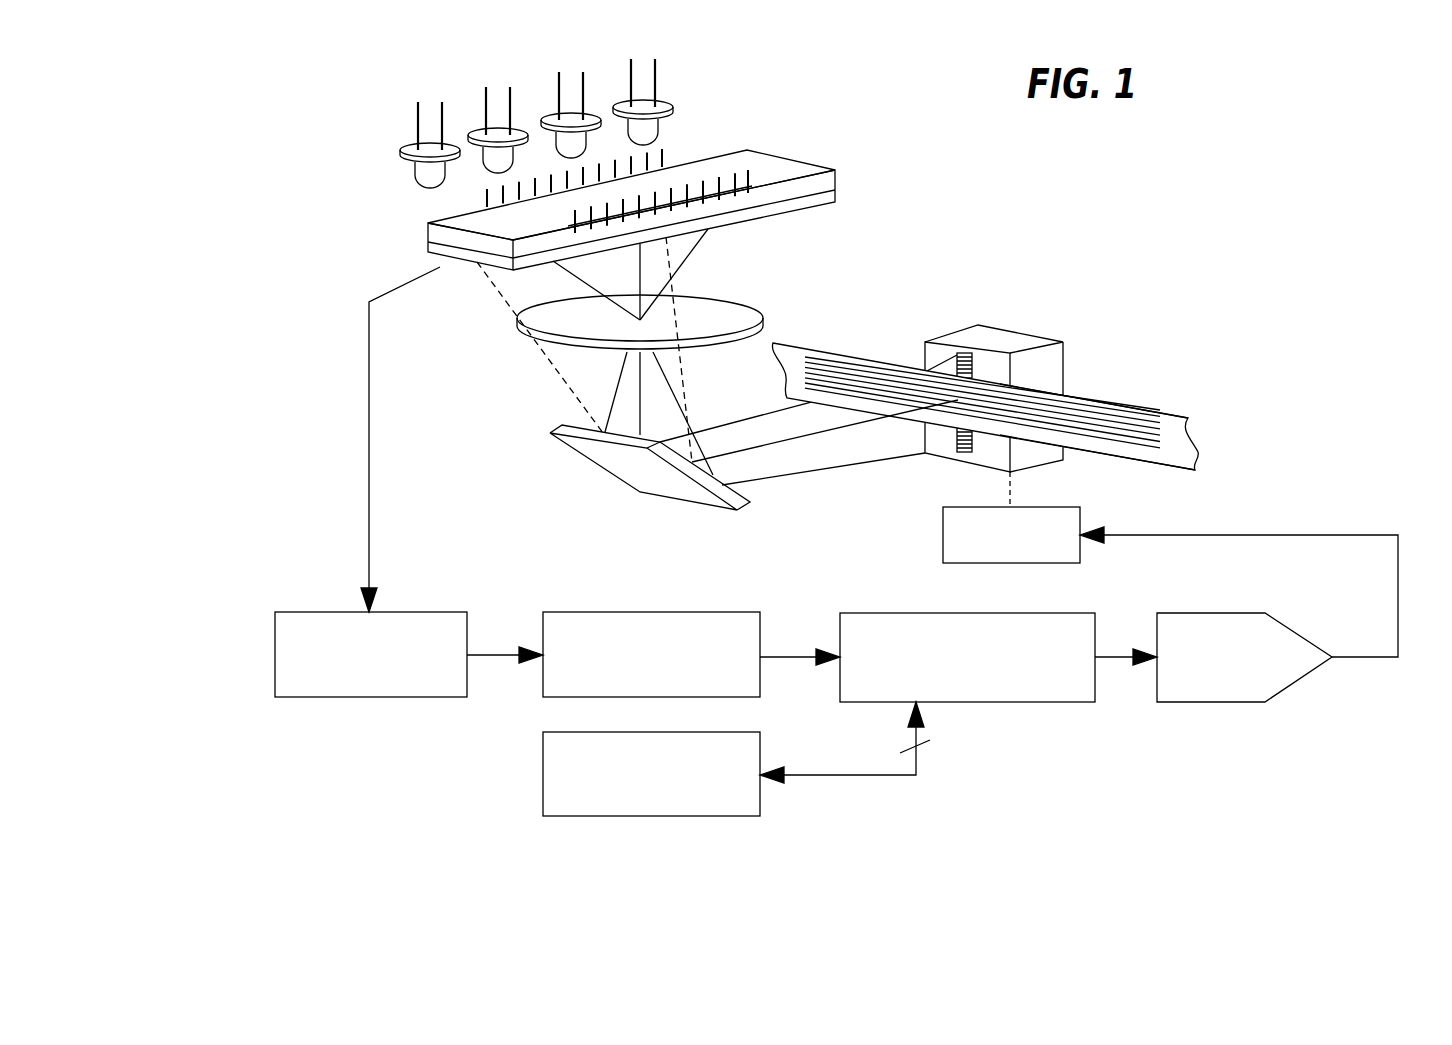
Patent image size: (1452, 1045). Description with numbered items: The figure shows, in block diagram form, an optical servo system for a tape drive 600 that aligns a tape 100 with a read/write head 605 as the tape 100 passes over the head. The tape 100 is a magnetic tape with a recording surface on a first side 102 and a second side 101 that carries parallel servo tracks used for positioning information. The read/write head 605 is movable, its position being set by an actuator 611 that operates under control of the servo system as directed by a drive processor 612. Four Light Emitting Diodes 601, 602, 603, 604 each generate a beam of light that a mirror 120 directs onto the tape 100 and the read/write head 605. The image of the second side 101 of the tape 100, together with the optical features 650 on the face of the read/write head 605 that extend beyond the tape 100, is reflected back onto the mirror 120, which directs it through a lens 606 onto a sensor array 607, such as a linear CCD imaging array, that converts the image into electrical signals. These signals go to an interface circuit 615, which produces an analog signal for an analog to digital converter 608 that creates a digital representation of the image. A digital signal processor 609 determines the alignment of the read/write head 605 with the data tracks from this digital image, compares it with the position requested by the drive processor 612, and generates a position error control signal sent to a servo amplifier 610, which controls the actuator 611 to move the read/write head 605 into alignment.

The tape 100 is at (1198, 445).
The second side 101 is at (1177, 462).
The first side 102 is at (1183, 405).
The mirror 120 is at (630, 473).
The optical servo system for a tape drive 600 is at (264, 220).
The Light Emitting Diode 601 is at (408, 147).
The Light Emitting Diode 602 is at (477, 122).
The Light Emitting Diode 603 is at (550, 112).
The Light Emitting Diode 604 is at (658, 102).
The read/write head 605 is at (1007, 335).
The lens 606 is at (732, 310).
The sensor array 607 is at (827, 180).
The analog to digital converter 608 is at (600, 612).
The digital signal processor 609 is at (1077, 702).
The servo amplifier 610 is at (1215, 702).
The actuator 611 is at (943, 533).
The drive processor 612 is at (620, 816).
The interface circuit 615 is at (275, 637).
The optical features 650 is at (935, 351).